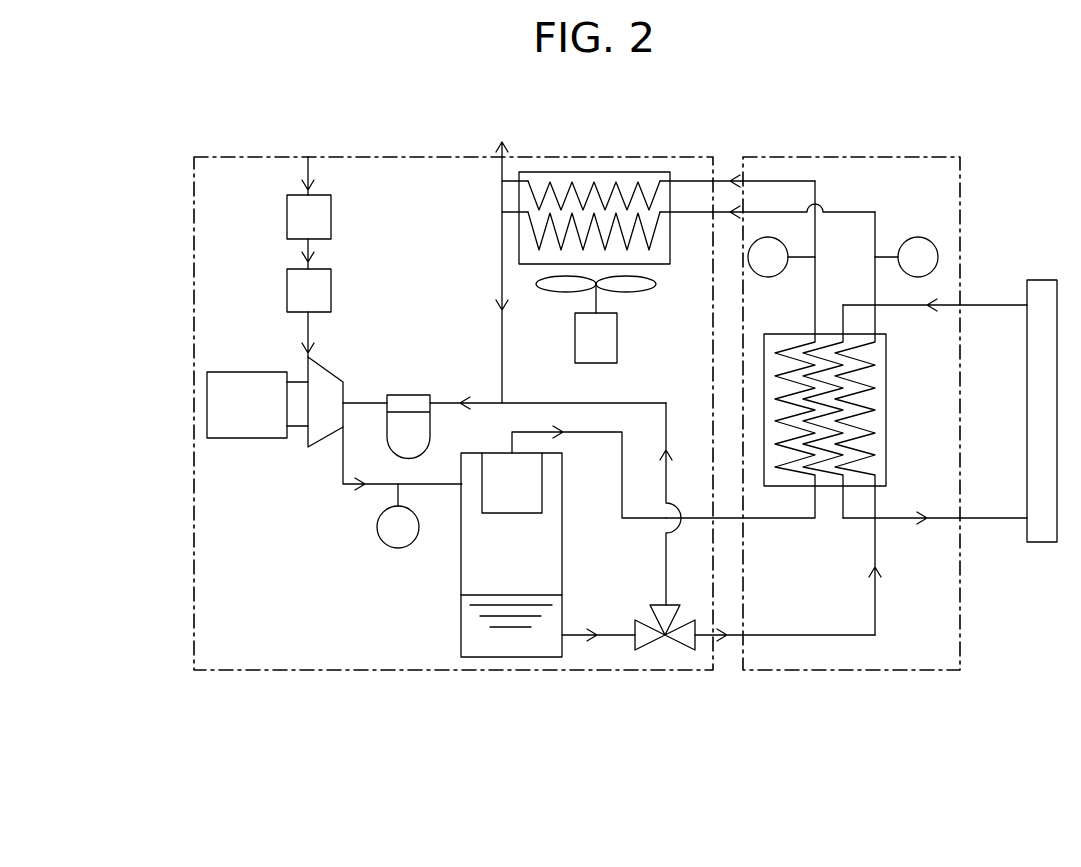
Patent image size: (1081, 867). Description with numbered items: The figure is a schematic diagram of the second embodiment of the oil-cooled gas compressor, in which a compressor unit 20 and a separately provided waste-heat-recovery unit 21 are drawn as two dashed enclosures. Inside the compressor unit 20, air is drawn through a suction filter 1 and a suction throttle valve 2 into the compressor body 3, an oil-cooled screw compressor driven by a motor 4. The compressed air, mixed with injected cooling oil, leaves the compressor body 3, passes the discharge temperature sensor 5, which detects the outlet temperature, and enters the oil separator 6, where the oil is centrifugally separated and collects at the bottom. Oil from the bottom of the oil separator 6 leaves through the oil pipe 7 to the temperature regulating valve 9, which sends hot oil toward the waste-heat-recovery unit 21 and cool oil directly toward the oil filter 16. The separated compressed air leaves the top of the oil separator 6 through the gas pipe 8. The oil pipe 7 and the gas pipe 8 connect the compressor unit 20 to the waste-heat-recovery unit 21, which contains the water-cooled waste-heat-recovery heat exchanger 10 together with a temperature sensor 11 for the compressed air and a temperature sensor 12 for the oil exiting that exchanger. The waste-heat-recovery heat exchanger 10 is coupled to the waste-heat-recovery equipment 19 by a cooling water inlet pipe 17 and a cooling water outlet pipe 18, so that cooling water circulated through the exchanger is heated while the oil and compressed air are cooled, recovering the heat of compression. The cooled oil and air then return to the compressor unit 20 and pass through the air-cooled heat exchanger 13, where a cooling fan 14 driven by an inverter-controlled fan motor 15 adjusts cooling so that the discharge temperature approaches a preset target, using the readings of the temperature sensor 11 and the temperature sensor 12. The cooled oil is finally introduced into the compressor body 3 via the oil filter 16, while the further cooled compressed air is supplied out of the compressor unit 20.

The suction filter 1 is at (287, 223).
The suction throttle valve 2 is at (287, 296).
The compressor body 3 is at (340, 380).
The motor 4 is at (220, 393).
The discharge temperature sensor 5 is at (397, 548).
The oil separator 6 is at (510, 657).
The oil pipe 7 is at (580, 637).
The gas pipe 8 is at (595, 432).
The temperature regulating valve 9 is at (663, 647).
The waste-heat-recovery heat exchanger 10 is at (887, 402).
The temperature sensor 11 is at (775, 277).
The temperature sensor 12 is at (940, 245).
The air-cooled heat exchanger 13 is at (625, 172).
The cooling fan 14 is at (633, 292).
The fan motor 15 is at (617, 347).
The oil filter 16 is at (402, 395).
The cooling water inlet pipe 17 is at (993, 304).
The cooling water outlet pipe 18 is at (978, 518).
The waste-heat-recovery equipment 19 is at (1047, 542).
The compressor unit 20 is at (250, 157).
The waste-heat-recovery unit 21 is at (905, 155).